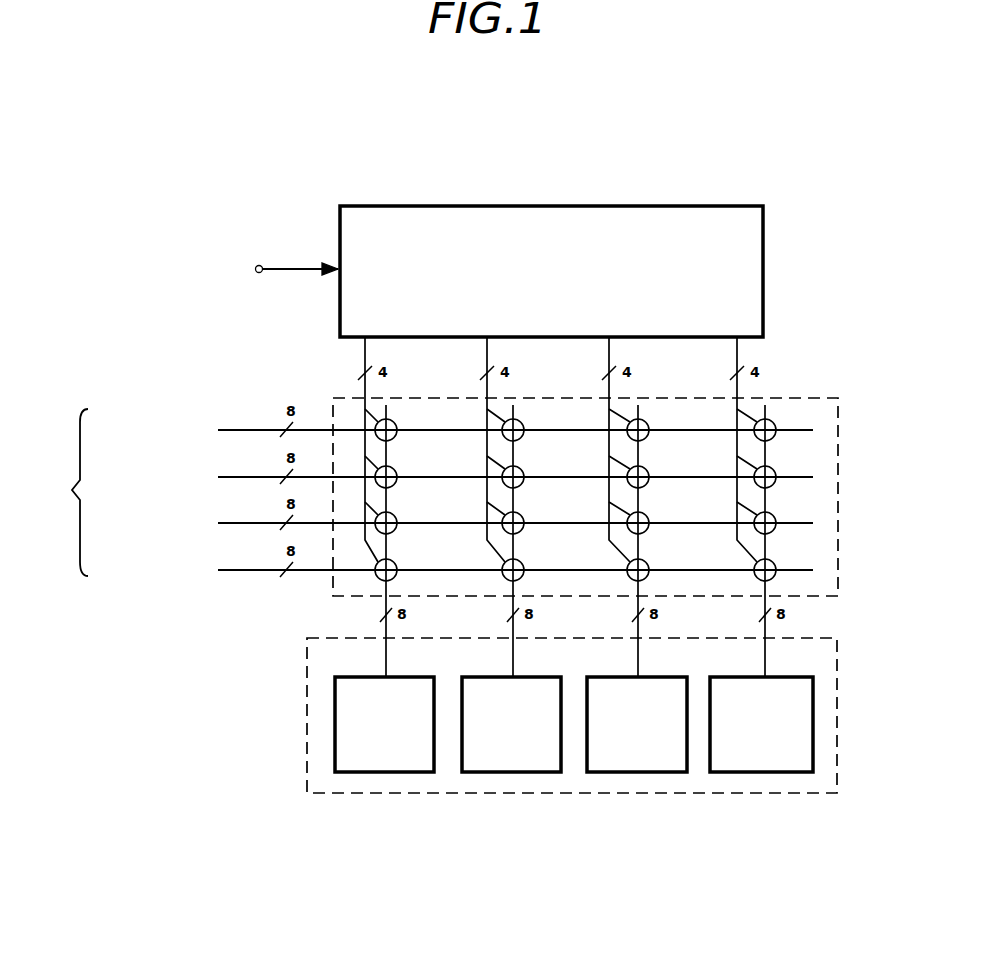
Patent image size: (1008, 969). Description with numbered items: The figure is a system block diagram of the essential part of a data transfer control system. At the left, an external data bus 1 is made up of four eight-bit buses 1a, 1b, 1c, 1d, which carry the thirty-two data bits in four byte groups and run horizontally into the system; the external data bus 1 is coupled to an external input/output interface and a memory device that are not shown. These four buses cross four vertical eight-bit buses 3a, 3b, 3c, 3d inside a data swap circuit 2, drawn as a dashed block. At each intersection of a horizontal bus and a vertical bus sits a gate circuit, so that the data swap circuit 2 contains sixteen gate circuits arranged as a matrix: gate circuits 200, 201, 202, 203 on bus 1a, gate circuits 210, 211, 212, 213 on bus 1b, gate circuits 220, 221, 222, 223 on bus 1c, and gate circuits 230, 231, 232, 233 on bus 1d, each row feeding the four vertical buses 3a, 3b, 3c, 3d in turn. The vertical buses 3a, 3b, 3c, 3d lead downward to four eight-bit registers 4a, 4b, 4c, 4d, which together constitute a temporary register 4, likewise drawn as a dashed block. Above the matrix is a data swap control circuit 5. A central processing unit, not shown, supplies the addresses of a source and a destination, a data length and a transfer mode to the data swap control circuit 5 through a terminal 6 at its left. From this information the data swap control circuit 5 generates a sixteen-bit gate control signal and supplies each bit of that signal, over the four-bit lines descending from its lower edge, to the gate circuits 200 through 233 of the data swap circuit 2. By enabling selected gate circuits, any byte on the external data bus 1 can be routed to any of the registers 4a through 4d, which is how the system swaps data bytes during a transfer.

The external data bus 1 is at (126, 494).
The 8-bit bus 1a is at (252, 428).
The 8-bit bus 1b is at (252, 475).
The 8-bit bus 1c is at (252, 521).
The 8-bit bus 1d is at (252, 568).
The data swap circuit 2 is at (838, 435).
The gate circuit 200 is at (405, 411).
The gate circuit 201 is at (532, 411).
The gate circuit 202 is at (657, 411).
The gate circuit 203 is at (784, 411).
The gate circuit 210 is at (405, 458).
The gate circuit 211 is at (532, 458).
The gate circuit 212 is at (657, 458).
The gate circuit 213 is at (784, 458).
The gate circuit 220 is at (405, 504).
The gate circuit 221 is at (532, 504).
The gate circuit 222 is at (657, 504).
The gate circuit 223 is at (784, 504).
The gate circuit 230 is at (405, 551).
The gate circuit 231 is at (532, 551).
The gate circuit 232 is at (657, 551).
The gate circuit 233 is at (784, 551).
The 8-bit bus 3a is at (384, 601).
The 8-bit bus 3b is at (511, 601).
The 8-bit bus 3c is at (636, 601).
The 8-bit bus 3d is at (763, 601).
The temporary register 4 is at (306, 690).
The 8-bit register 4a is at (400, 677).
The 8-bit register 4b is at (527, 677).
The 8-bit register 4c is at (650, 677).
The 8-bit register 4d is at (774, 677).
The data swap control circuit 5 is at (722, 206).
The terminal 6 is at (257, 265).